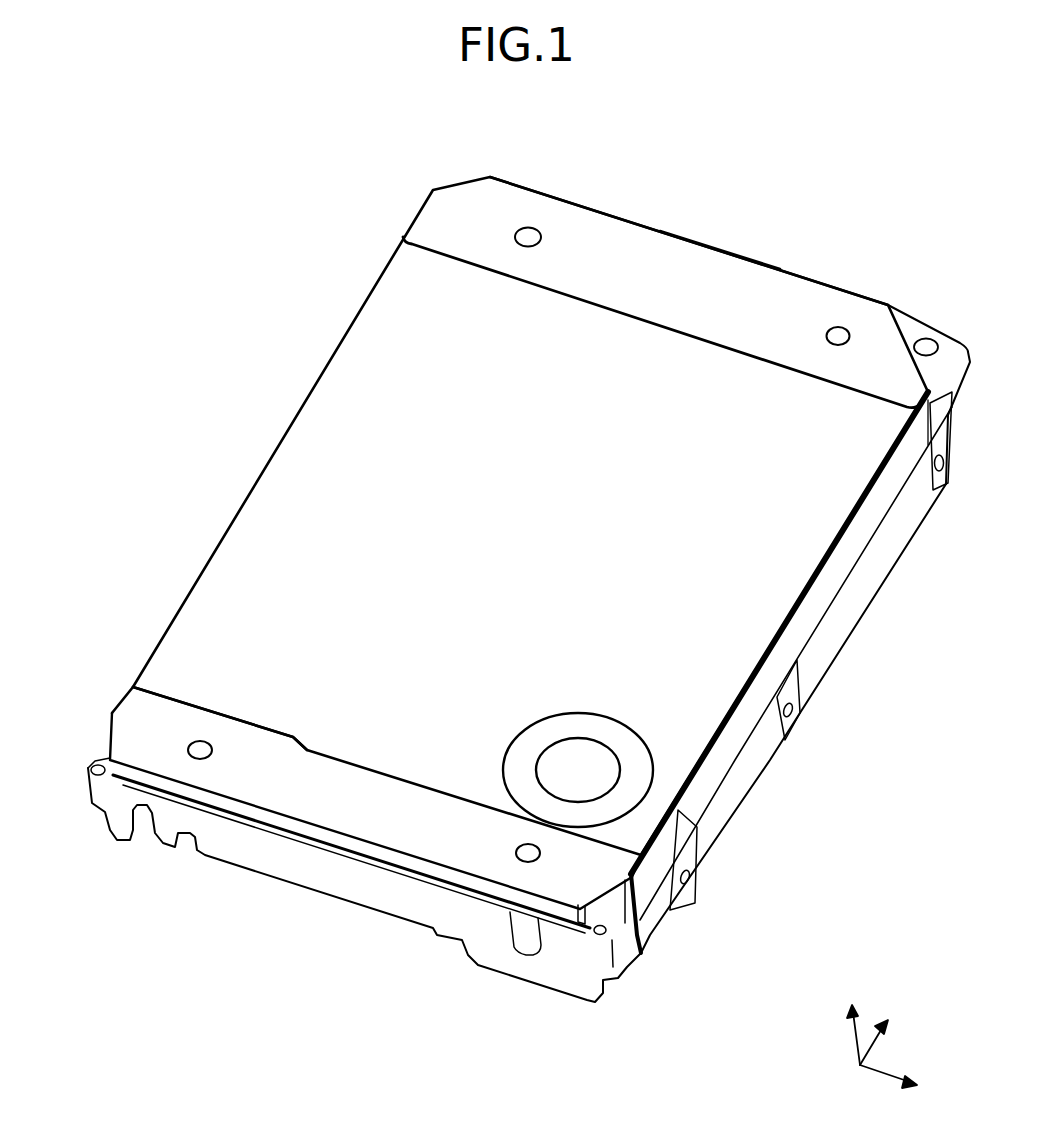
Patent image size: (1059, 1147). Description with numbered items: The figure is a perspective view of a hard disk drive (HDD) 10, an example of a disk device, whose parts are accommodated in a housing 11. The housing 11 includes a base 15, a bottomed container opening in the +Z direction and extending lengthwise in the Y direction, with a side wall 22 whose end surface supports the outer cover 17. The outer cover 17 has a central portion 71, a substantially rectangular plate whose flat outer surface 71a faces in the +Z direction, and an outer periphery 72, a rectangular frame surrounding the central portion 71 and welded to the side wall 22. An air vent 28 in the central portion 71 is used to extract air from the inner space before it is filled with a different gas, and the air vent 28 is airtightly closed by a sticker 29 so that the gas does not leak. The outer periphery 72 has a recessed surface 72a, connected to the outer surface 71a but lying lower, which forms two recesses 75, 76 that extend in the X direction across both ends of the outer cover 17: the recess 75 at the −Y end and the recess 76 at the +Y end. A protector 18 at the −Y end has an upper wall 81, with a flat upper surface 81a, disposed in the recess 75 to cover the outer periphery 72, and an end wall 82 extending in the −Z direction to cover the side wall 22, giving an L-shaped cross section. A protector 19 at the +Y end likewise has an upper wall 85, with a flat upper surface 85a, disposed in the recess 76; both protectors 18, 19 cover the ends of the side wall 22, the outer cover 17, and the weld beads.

The hard disk drive (HDD) 10 is at (297, 170).
The housing 11 is at (497, 975).
The base 15 is at (807, 680).
The side wall 22 is at (757, 757).
The outer cover 17 is at (520, 525).
The central portion 71 is at (520, 525).
The outer surface 71a is at (363, 507).
The protector 18 is at (143, 710).
The protector 19 is at (468, 202).
The air vent 28 is at (577, 772).
The sticker 29 is at (590, 748).
The recess 76 is at (692, 283).
The upper wall 85 is at (689, 214).
The upper surface 85a is at (593, 253).
The upper wall 81 is at (375, 883).
The upper surface 81a is at (263, 792).
The end wall 82 is at (170, 787).
The outer periphery 72 is at (354, 936).
The recessed surface 72a is at (354, 936).
The recess 75 is at (330, 810).